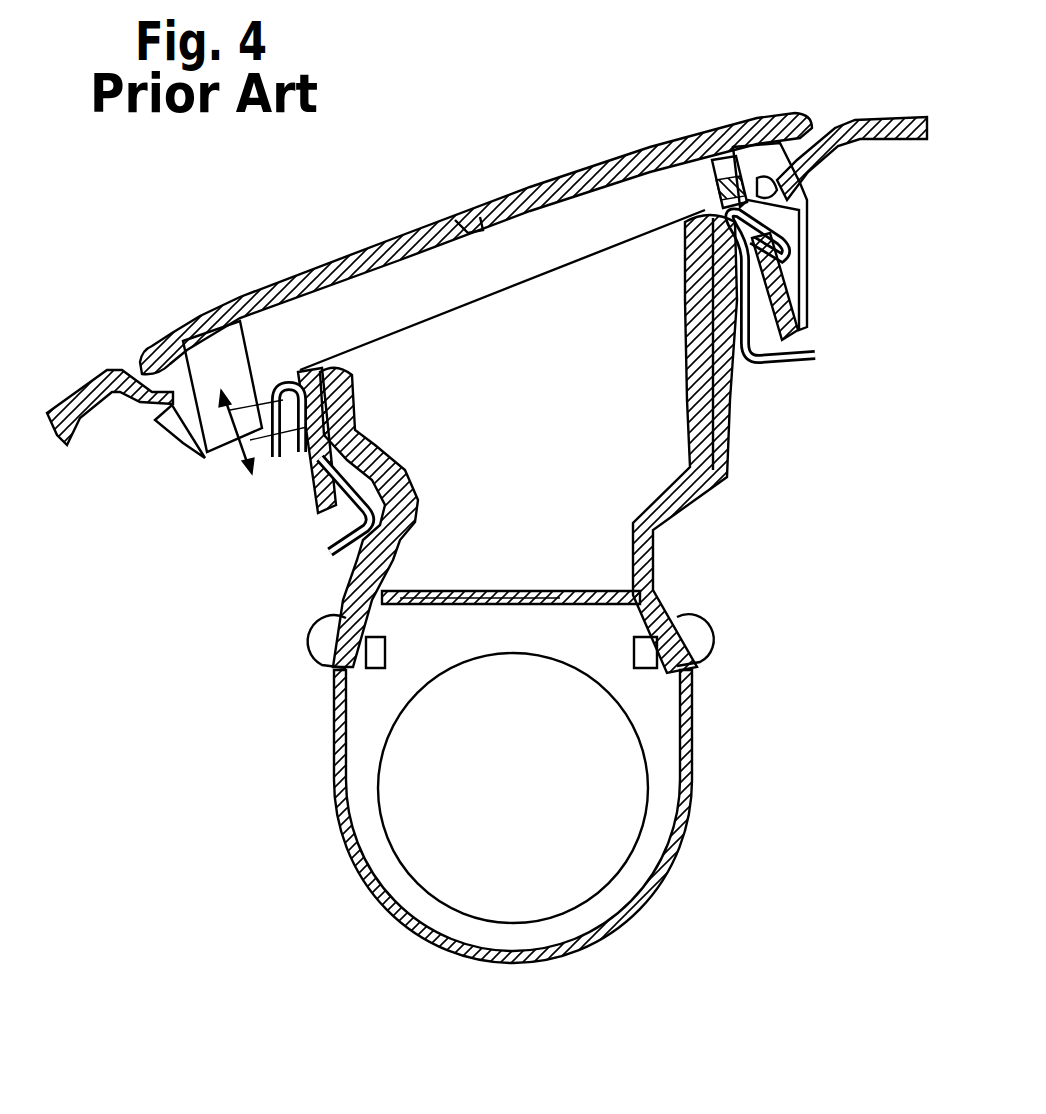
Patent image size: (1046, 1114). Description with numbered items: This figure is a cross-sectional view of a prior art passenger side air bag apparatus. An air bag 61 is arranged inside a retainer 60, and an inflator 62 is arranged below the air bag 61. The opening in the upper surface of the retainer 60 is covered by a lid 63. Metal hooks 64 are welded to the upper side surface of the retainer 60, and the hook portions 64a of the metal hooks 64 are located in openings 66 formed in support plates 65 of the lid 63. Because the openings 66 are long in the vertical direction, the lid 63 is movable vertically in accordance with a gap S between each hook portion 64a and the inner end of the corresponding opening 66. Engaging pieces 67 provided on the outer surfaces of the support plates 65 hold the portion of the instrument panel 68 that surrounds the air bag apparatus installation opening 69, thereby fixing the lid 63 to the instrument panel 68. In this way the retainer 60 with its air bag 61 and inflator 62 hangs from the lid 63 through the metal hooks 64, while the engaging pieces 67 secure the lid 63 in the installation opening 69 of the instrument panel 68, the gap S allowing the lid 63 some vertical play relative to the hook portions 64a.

The retainer 60 is at (704, 499).
The air bag 61 is at (357, 430).
The inflator 62 is at (410, 832).
The lid 63 is at (537, 166).
The metal hook 64 is at (742, 380).
The hook portion 64a is at (777, 232).
The support plate 65 is at (800, 287).
The opening 66 is at (703, 200).
The engaging piece 67 is at (820, 198).
The instrument panel 68 is at (878, 117).
The air bag apparatus installation opening 69 is at (122, 407).
The gap S is at (222, 445).